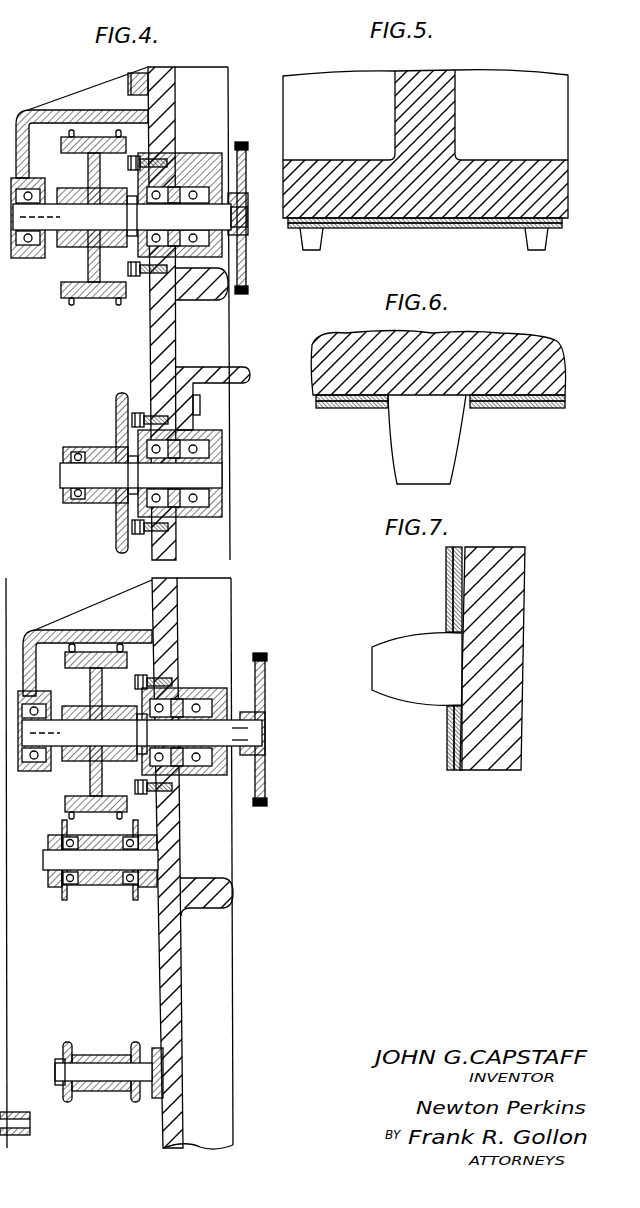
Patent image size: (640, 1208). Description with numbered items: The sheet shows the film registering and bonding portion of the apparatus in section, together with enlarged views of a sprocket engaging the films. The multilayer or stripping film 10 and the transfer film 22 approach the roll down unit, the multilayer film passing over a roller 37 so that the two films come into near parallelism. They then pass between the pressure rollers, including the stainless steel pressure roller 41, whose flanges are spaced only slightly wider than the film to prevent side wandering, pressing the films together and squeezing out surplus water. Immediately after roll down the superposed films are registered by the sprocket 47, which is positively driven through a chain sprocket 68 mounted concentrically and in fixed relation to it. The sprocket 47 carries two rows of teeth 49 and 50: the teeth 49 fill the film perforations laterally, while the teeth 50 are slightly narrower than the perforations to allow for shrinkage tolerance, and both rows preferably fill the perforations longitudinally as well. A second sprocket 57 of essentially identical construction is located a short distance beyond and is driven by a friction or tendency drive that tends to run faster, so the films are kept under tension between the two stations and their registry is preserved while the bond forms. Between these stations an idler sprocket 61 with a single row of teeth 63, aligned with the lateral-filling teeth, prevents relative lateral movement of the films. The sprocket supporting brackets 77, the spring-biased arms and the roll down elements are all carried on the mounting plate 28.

In FIG. 5, the multilayer or stripping film 10 is at (432, 228).
In FIG. 6, the multilayer or stripping film 10 is at (317, 402).
In FIG. 7, the multilayer or stripping film 10 is at (458, 548).
In FIG. 5, the transfer film 22 is at (388, 228).
In FIG. 6, the transfer film 22 is at (365, 408).
In FIG. 7, the transfer film 22 is at (446, 591).
In FIG. 4, the mounting plate 28 is at (172, 943).
In FIG. 4, the roller 37 is at (68, 1046).
In FIG. 4, the pressure roller 41 is at (84, 895).
In FIG. 4, the sprocket 47 is at (72, 800).
In FIG. 5, the sprocket 47 is at (470, 200).
In FIG. 6, the sprocket 47 is at (492, 338).
In FIG. 7, the sprocket 47 is at (505, 648).
In FIG. 4, the row of teeth 49 is at (120, 644).
In FIG. 5, the row of teeth 49 is at (538, 242).
In FIG. 7, the row of teeth 49 is at (404, 690).
In FIG. 4, the row of teeth 50 is at (72, 644).
In FIG. 5, the row of teeth 50 is at (318, 240).
In FIG. 6, the row of teeth 50 is at (447, 448).
In FIG. 4, the second sprocket 57 is at (62, 292).
In FIG. 4, the idler sprocket 61 is at (117, 523).
In FIG. 4, the row of teeth 63 is at (117, 394).
In FIG. 4, the sprocket 68 is at (266, 672).
In FIG. 4, the sprocket supporting bracket 77 is at (30, 118).